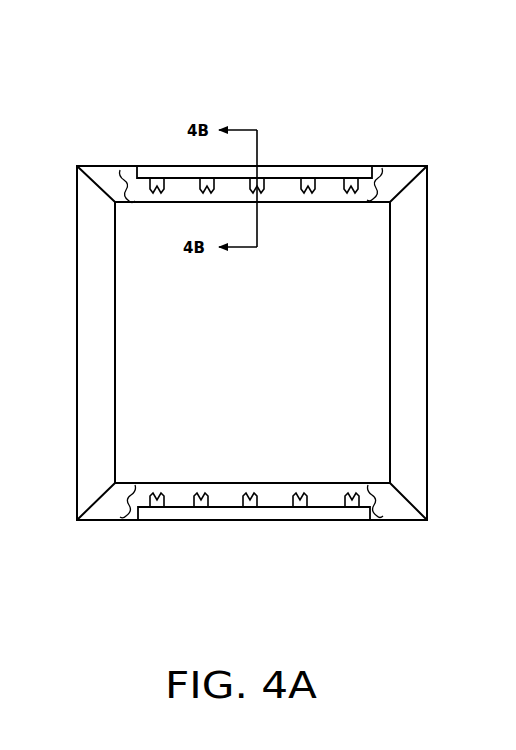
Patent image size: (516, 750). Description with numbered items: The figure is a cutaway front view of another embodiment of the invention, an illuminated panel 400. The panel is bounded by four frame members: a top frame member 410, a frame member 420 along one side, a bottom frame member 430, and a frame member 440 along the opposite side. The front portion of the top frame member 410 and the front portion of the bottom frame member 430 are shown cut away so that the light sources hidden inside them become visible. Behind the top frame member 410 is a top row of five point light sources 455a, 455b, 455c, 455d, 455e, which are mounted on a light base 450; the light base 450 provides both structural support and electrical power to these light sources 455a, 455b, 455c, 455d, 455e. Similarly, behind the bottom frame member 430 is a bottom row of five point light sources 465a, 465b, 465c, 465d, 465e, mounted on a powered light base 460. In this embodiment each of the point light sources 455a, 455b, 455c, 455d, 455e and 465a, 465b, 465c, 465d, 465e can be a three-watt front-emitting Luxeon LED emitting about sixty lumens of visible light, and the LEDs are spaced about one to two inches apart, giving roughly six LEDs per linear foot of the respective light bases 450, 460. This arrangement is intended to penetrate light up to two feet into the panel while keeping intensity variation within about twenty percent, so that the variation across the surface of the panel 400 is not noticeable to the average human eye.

The illuminated panel 400 is at (156, 66).
The top frame member 410 is at (405, 166).
The frame member 420 is at (77, 343).
The bottom frame member 430 is at (93, 522).
The frame member 440 is at (427, 345).
The light base 450 is at (323, 179).
The point light source 455a is at (159, 180).
The point light source 455b is at (207, 180).
The point light source 455c is at (258, 180).
The point light source 455d is at (308, 180).
The point light source 455e is at (352, 180).
The powered light base 460 is at (277, 503).
The point light source 465a is at (157, 510).
The point light source 465b is at (200, 510).
The point light source 465c is at (252, 510).
The point light source 465d is at (300, 510).
The point light source 465e is at (352, 510).